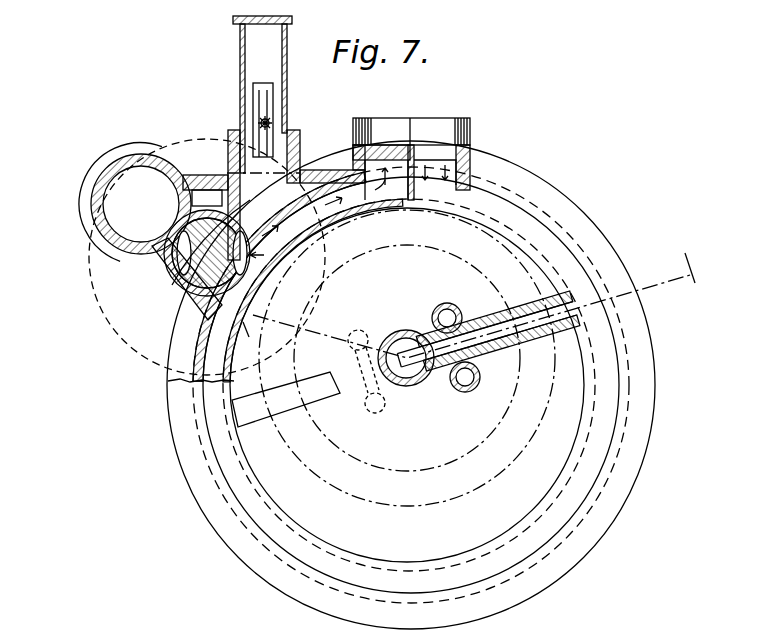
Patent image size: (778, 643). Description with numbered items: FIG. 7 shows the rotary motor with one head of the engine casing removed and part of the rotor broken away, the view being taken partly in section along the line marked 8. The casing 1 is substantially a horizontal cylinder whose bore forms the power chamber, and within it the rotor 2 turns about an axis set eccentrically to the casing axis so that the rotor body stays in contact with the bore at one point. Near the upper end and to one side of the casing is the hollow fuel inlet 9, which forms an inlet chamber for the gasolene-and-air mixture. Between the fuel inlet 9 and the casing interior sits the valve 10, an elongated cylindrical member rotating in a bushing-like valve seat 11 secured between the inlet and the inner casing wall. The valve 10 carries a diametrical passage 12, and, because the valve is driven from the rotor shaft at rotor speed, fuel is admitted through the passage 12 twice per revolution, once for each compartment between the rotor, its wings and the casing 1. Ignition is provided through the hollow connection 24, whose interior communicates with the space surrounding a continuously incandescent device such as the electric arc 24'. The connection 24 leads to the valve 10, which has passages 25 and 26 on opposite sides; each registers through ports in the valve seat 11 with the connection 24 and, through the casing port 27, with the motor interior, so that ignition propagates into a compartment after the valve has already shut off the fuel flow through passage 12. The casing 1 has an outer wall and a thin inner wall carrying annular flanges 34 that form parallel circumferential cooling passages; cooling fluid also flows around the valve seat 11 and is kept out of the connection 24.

The casing 1 is at (250, 545).
The rotor 2 is at (285, 433).
The section line 8 is at (471, 305).
The fuel inlet 9 is at (102, 196).
The valve 10 is at (180, 313).
The valve seat 11 is at (215, 290).
The passage 12 is at (213, 172).
The hollow connection 24 is at (378, 157).
The electric arc 24' is at (277, 94).
The passage 25 is at (178, 256).
The passage 26 is at (264, 255).
The port 27 is at (262, 262).
The annular flange 34 is at (213, 355).